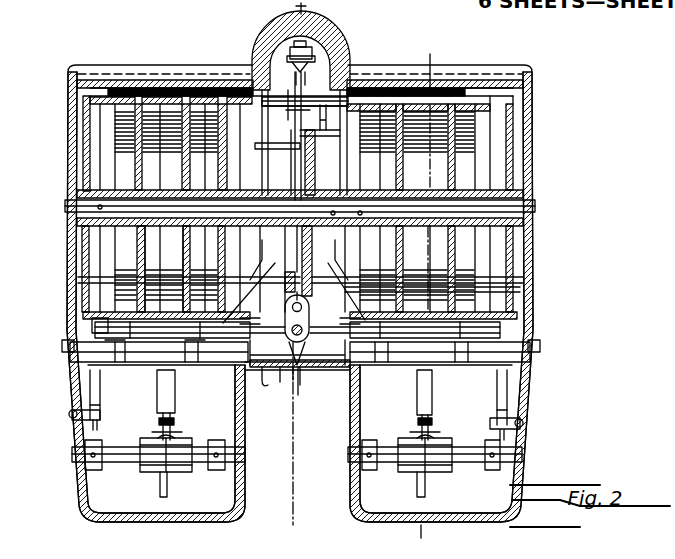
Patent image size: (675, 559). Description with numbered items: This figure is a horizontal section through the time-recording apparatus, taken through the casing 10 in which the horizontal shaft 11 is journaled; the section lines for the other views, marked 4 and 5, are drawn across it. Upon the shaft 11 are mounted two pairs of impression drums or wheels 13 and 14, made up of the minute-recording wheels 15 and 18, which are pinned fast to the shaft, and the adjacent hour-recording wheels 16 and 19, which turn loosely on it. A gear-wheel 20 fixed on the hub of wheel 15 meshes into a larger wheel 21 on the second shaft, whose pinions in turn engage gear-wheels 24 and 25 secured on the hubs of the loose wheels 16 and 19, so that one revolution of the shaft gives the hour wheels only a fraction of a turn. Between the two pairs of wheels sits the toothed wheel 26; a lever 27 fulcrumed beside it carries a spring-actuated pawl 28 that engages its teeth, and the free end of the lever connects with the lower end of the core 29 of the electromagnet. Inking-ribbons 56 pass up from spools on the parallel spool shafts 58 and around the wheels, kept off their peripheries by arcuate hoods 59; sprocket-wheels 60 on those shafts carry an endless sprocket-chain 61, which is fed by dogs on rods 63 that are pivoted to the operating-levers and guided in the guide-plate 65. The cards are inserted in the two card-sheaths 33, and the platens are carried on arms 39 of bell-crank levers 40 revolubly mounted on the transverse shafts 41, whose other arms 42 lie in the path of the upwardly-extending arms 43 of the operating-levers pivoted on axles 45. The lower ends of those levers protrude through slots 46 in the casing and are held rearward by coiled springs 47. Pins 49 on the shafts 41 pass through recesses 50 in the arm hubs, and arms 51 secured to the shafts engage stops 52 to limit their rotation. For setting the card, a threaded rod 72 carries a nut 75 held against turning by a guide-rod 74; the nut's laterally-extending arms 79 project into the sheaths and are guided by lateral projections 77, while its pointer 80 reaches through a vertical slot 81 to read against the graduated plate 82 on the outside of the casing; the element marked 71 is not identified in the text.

The vertical center line 4 is at (295, 444).
The center line 5 is at (426, 293).
The casing 10 is at (70, 257).
The shaft 11 is at (75, 208).
The impression drum or wheel pair 13 is at (300, 56).
The impression drum or wheel pair 14 is at (440, 177).
The minute-recording wheel 15 is at (171, 204).
The hour-recording wheel 16 is at (165, 269).
The minute-recording wheel 18 is at (374, 269).
The hour-recording wheel 19 is at (458, 269).
The gear-wheel 20 is at (82, 172).
The gear-wheel 21 is at (80, 299).
The gear-wheel 24 is at (222, 253).
The gear-wheel 25 is at (468, 293).
The toothed wheel 26 is at (302, 171).
The lever 27 is at (268, 170).
The spring-actuated pawl 28 is at (350, 87).
The core 29 is at (322, 38).
The card-sheath 33 is at (100, 326).
The arm 39 is at (536, 311).
The bell-crank lever 40 is at (316, 392).
The shaft 41 is at (68, 352).
The arm 42 is at (157, 412).
The arm 43 is at (178, 435).
The axle 45 is at (72, 456).
The slot 46 is at (160, 488).
The coiled spring 47 is at (176, 420).
The pin 49 is at (74, 380).
The recess 50 is at (540, 396).
The arm 51 is at (90, 407).
The stop 52 is at (80, 419).
The inking-ribbon 56 is at (75, 88).
The spool shaft 58 is at (490, 290).
The arcuate hood 59 is at (116, 86).
The sprocket-wheel 60 is at (288, 272).
The endless sprocket-chain 61 is at (417, 259).
The rod 63 is at (318, 153).
The guide-plate 65 is at (255, 148).
The bracket 71 is at (146, 316).
The threaded rod 72 is at (282, 385).
The guide-rod 74 is at (288, 306).
The nut 75 is at (306, 306).
The lateral projection 77 is at (486, 328).
The arm 79 is at (300, 350).
The pointer 80 is at (312, 385).
The vertical slot 81 is at (290, 393).
The graduated plate 82 is at (257, 385).